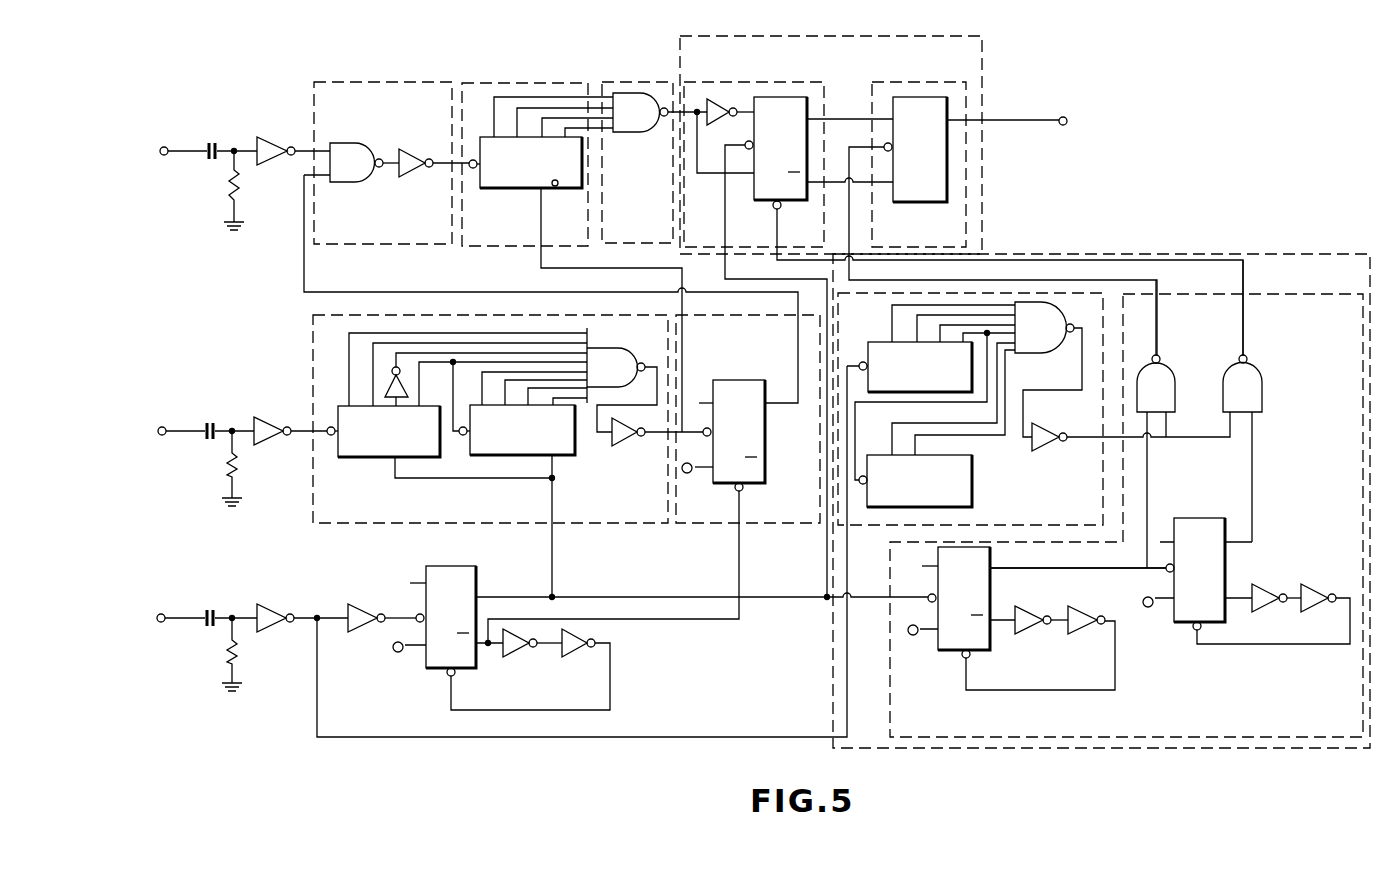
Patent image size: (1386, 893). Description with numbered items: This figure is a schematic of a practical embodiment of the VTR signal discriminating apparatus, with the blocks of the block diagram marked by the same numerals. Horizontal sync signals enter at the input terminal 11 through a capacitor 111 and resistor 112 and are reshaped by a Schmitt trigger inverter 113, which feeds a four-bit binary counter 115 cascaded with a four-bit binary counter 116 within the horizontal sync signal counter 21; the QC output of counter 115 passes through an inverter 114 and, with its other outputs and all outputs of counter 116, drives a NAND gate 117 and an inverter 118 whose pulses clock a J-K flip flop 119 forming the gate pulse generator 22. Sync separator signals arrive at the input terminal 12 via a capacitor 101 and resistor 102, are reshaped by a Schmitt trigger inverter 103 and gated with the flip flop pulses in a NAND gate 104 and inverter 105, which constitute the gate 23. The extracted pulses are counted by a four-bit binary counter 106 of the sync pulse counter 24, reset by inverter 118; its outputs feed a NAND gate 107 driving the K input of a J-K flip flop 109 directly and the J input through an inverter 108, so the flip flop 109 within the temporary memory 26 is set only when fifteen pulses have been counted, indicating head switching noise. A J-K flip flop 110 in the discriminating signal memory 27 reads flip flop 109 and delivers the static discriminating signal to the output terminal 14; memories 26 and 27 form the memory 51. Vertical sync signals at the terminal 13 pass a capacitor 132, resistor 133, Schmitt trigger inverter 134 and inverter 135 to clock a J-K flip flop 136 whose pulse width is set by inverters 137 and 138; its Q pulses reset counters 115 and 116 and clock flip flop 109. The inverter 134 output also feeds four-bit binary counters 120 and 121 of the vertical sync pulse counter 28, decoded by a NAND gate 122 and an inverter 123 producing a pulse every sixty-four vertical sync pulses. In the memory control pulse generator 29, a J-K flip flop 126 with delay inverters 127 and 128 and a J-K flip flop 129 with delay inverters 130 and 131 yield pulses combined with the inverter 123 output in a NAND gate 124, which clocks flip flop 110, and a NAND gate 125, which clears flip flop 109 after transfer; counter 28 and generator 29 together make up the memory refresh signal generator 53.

The input terminal 11 is at (152, 426).
The input terminal 12 is at (170, 145).
The terminal 13 is at (152, 610).
The output terminal 14 is at (1060, 115).
The horizontal sync signal counter 21 is at (578, 319).
The gate pulse generator 22 is at (720, 319).
The gate 23 is at (416, 83).
The sync pulse counter 24 is at (520, 83).
The temporary memory 26 is at (748, 83).
The discriminating signal memory 27 is at (910, 83).
The vertical sync pulse counter 28 is at (865, 528).
The memory control pulse generator 29 is at (1316, 293).
The memory 51 is at (848, 34).
The memory refresh signal generator 53 is at (1240, 252).
The capacitor 101 is at (209, 142).
The resistor 102 is at (224, 186).
The Schmitt trigger inverter 103 is at (262, 137).
The NAND gate 104 is at (352, 148).
The inverter 105 is at (411, 177).
The 4-bit binary counter 106 is at (575, 264).
The NAND gate 107 is at (648, 135).
The inverter 108 is at (721, 105).
The J-K flip flop 109 is at (808, 112).
The J-K flip flop 110 is at (893, 98).
The capacitor 111 is at (202, 425).
The resistor 112 is at (226, 476).
The Schmitt trigger inverter 113 is at (252, 414).
The inverter 114 is at (383, 383).
The 4-bit binary counter 115 is at (366, 460).
The 4-bit binary counter 116 is at (562, 462).
The NAND gate 117 is at (613, 353).
The inverter 118 is at (612, 452).
The J-K flip flop 119 is at (752, 365).
The 4-bit binary counter 120 is at (870, 341).
The 4-bit binary counter 121 is at (973, 492).
The NAND gate 122 is at (1048, 338).
The inverter 123 is at (1053, 418).
The NAND gate 124 is at (1170, 385).
The NAND gate 125 is at (1257, 387).
The J-K flip flop 126 is at (944, 655).
The inverter 127 is at (1031, 610).
The inverter 128 is at (1090, 598).
The J-K flip flop 129 is at (1195, 517).
The inverter 130 is at (1268, 571).
The inverter 131 is at (1320, 571).
The capacitor 132 is at (205, 611).
The resistor 133 is at (225, 655).
The Schmitt trigger inverter 134 is at (273, 610).
The inverter 135 is at (355, 605).
The J-K flip flop 136 is at (470, 567).
The inverter 137 is at (513, 660).
The inverter 138 is at (572, 660).